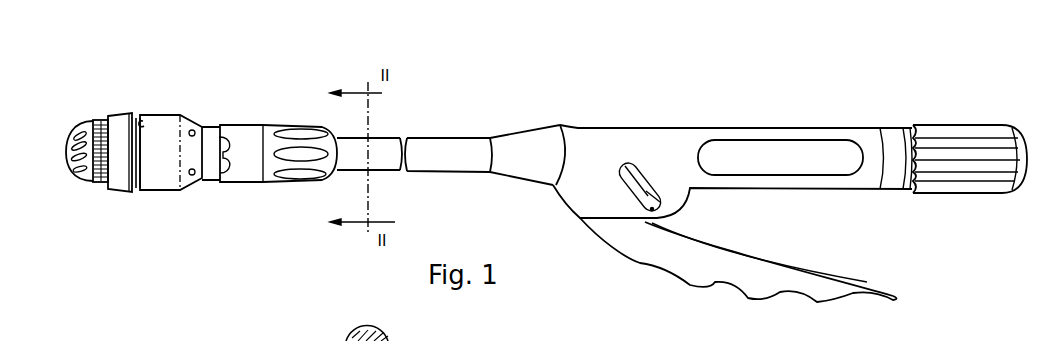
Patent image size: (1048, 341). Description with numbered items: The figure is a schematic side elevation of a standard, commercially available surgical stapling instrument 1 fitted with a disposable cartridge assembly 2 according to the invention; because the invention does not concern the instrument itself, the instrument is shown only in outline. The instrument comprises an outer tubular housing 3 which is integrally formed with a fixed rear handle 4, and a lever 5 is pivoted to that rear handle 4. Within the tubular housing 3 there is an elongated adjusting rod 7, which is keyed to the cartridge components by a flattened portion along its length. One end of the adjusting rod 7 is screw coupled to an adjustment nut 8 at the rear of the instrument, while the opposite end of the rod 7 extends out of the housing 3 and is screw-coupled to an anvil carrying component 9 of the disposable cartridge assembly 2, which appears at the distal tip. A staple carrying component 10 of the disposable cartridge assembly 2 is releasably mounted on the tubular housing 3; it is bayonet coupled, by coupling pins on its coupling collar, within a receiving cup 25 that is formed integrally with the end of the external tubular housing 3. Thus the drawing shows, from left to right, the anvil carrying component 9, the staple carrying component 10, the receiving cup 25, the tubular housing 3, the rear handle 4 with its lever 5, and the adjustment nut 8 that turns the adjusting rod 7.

The surgical stapling instrument 1 is at (577, 122).
The disposable cartridge assembly 2 is at (145, 112).
The outer tubular housing 3 is at (433, 137).
The fixed rear handle 4 is at (642, 128).
The lever 5 is at (807, 300).
The adjusting rod 7 is at (132, 193).
The adjustment nut 8 is at (947, 125).
The anvil carrying component 9 is at (93, 121).
The staple carrying component 10 is at (170, 114).
The receiving cup 25 is at (245, 124).